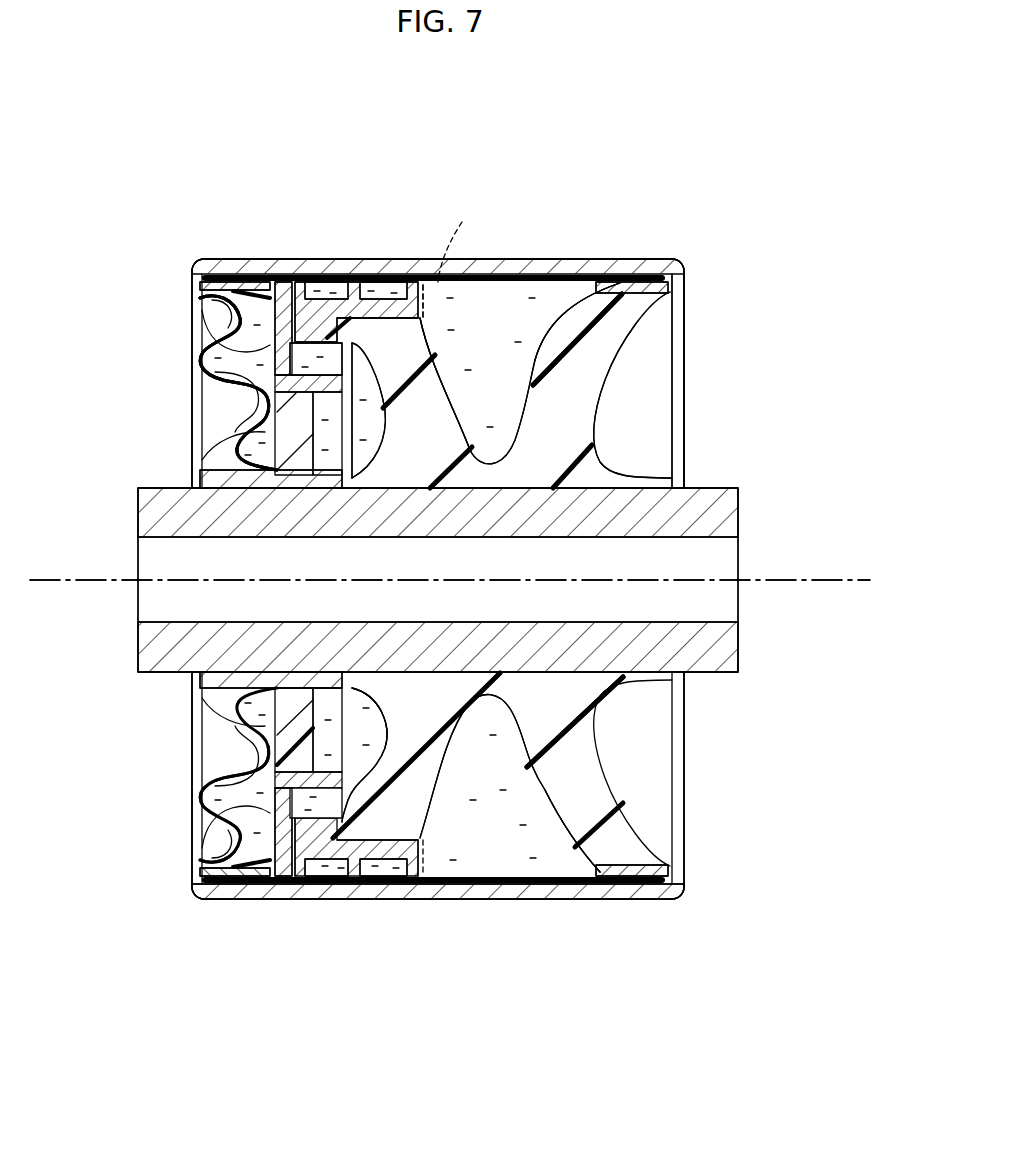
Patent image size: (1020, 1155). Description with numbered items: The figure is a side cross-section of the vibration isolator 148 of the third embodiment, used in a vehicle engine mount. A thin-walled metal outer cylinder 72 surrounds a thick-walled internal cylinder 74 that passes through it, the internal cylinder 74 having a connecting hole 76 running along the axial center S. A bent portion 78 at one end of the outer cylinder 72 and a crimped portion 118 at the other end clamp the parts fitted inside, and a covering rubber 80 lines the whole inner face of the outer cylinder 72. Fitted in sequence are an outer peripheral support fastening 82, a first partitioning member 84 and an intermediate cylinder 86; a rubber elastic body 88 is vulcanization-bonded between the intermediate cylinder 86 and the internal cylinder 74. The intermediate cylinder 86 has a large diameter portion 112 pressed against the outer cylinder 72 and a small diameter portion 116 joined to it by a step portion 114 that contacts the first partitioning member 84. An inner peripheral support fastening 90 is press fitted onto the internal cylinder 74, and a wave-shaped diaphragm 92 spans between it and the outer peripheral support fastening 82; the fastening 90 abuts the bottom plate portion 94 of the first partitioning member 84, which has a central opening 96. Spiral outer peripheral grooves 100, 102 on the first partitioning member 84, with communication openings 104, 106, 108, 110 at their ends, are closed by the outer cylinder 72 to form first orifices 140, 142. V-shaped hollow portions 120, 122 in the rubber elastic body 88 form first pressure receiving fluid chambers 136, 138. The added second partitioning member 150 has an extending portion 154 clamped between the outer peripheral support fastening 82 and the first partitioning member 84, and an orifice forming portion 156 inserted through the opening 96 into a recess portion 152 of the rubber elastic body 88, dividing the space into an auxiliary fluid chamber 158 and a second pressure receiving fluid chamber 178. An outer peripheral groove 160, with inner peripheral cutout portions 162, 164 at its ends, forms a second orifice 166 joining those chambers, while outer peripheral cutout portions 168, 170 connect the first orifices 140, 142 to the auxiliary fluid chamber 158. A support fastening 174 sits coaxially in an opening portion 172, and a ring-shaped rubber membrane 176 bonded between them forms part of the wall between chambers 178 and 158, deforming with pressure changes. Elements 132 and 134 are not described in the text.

The vibration isolator 148 is at (730, 167).
The outer cylinder 72 is at (650, 262).
The internal cylinder 74 is at (740, 489).
The connecting hole 76 is at (735, 623).
The bent portion 78 is at (192, 865).
The covering rubber 80 is at (625, 900).
The outer peripheral support fastening 82 is at (227, 898).
The first partitioning member 84 is at (357, 898).
The intermediate cylinder 86 is at (686, 285).
The rubber elastic body 88 is at (636, 366).
The inner peripheral support fastening 90 is at (200, 687).
The diaphragm 92 is at (210, 395).
The bottom plate portion 94 is at (238, 833).
The opening 96 is at (255, 808).
The outer peripheral groove 100 is at (372, 290).
The outer peripheral groove 102 is at (373, 898).
The communication opening 104 is at (418, 290).
The communication opening 106 is at (297, 898).
The communication opening 108 is at (427, 898).
The communication opening 110 is at (280, 288).
The large diameter portion 112 is at (630, 290).
The step portion 114 is at (438, 282).
The small diameter portion 116 is at (425, 330).
The crimped portion 118 is at (675, 896).
The hollow portion 120 is at (548, 292).
The hollow portion 122 is at (552, 898).
The leaf spring 132 is at (590, 292).
The leaf spring 134 is at (593, 898).
The first pressure receiving fluid chamber 136 is at (528, 247).
The first pressure receiving fluid chamber 138 is at (520, 977).
The first orifice 140 is at (413, 232).
The first orifice 142 is at (338, 232).
The second partitioning member 150 is at (385, 418).
The recess portion 152 is at (376, 488).
The extending portion 154 is at (210, 325).
The orifice forming portion 156 is at (362, 714).
The auxiliary fluid chamber 158 is at (145, 345).
The outer peripheral groove 160 is at (323, 898).
The inner peripheral cutout portion 162 is at (355, 381).
The inner peripheral cutout portion 164 is at (250, 772).
The second orifice 166 is at (177, 428).
The outer peripheral cutout portion 168 is at (280, 897).
The outer peripheral cutout portion 170 is at (228, 283).
The opening portion 172 is at (245, 437).
The support fastening 174 is at (290, 488).
The rubber membrane 176 is at (322, 683).
The second pressure receiving fluid chamber 178 is at (400, 606).
The axial center S is at (832, 580).